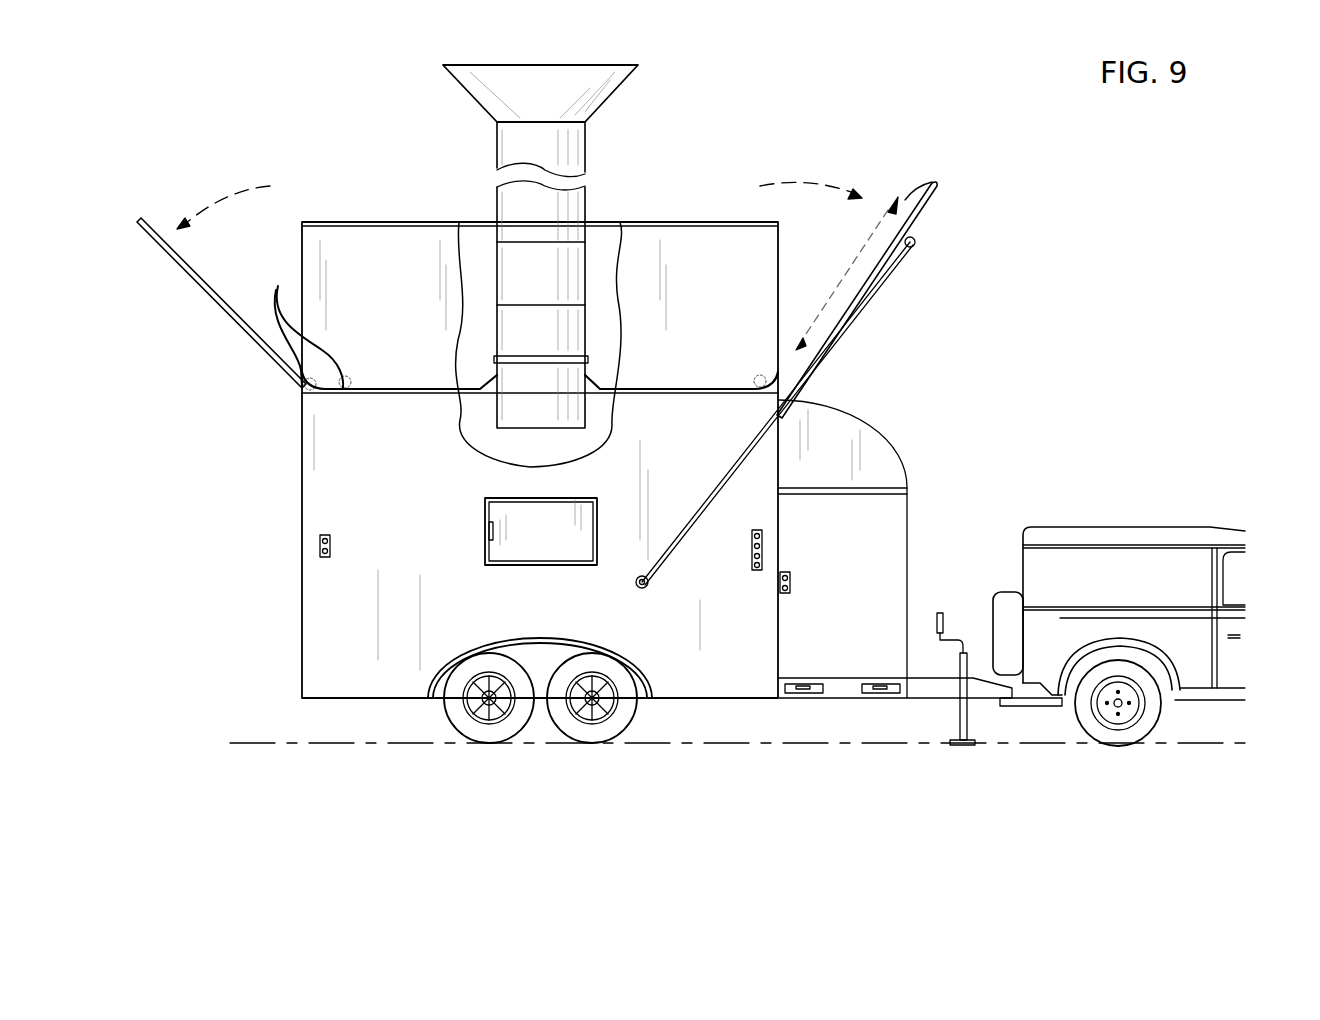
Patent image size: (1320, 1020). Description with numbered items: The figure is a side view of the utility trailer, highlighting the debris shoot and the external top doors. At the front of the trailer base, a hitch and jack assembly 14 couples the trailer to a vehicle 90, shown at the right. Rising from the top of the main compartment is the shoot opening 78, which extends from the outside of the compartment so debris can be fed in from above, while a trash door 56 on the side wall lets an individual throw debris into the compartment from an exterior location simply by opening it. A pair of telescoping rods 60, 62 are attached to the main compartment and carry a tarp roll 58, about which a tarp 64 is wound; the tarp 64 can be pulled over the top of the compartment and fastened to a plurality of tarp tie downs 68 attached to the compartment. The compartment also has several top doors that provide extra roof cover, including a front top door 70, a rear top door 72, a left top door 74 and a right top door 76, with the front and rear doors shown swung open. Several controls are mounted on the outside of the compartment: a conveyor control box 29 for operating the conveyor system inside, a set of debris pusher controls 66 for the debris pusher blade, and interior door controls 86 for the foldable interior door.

The hitch and jack assembly 14 is at (922, 699).
The conveyor control box 29 is at (320, 545).
The trash door 56 is at (490, 550).
The tarp roll 58 is at (915, 243).
The telescoping rod 60 is at (865, 300).
The telescoping rod 62 is at (812, 342).
The tarp 64 is at (615, 228).
The debris pusher controls 66 is at (763, 553).
The tarp tie downs 68 is at (513, 322).
The front top door 70 is at (938, 184).
The rear top door 72 is at (222, 306).
The left top door 74 is at (787, 179).
The right top door 76 is at (748, 222).
The shoot opening 78 is at (497, 147).
The interior door controls 86 is at (791, 584).
The vehicle 90 is at (1088, 527).